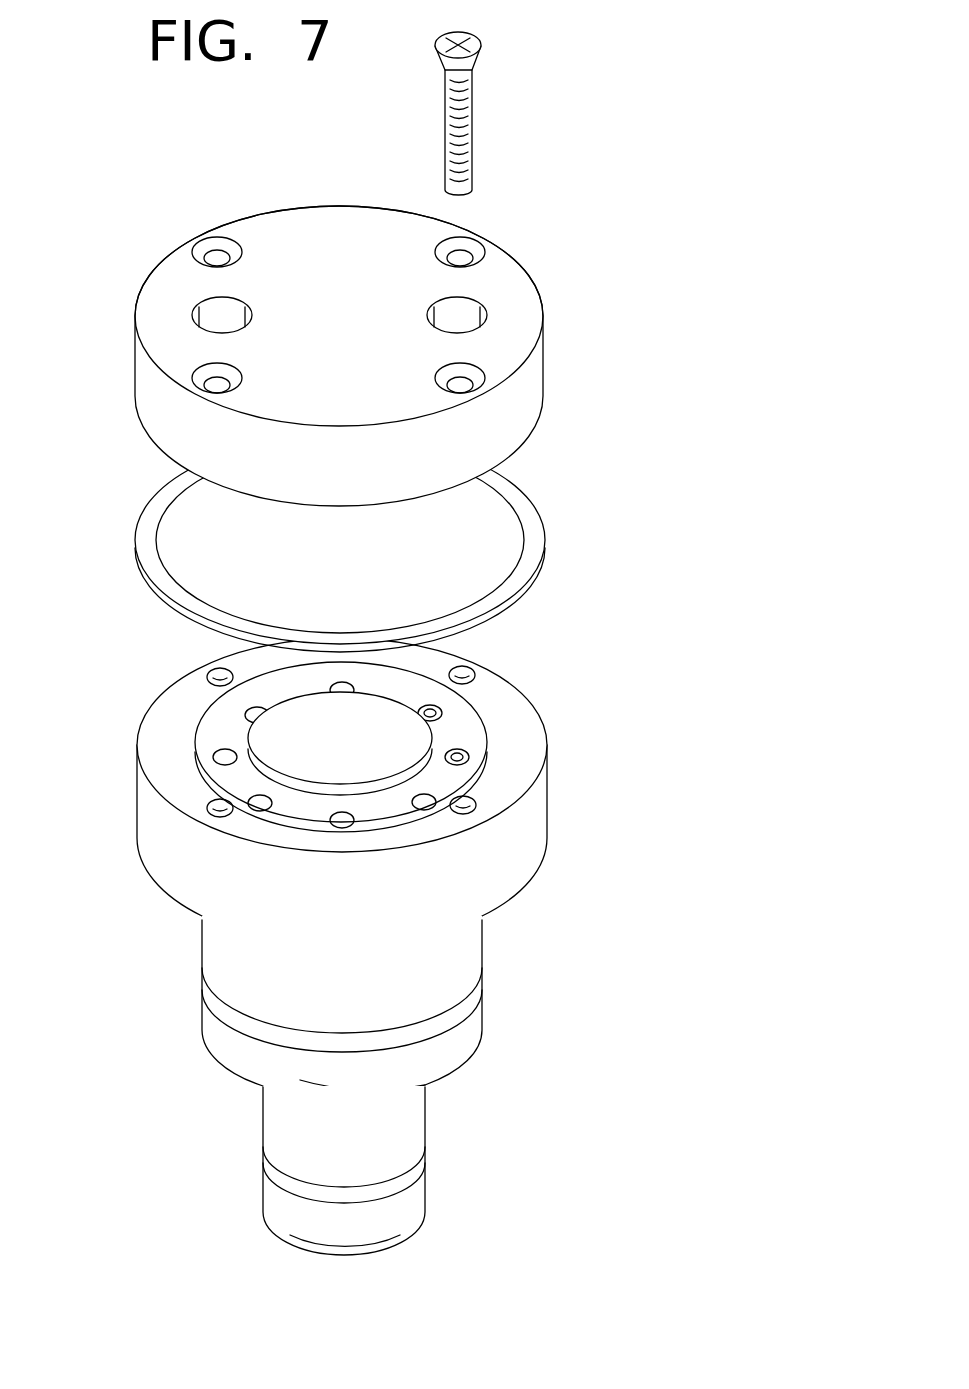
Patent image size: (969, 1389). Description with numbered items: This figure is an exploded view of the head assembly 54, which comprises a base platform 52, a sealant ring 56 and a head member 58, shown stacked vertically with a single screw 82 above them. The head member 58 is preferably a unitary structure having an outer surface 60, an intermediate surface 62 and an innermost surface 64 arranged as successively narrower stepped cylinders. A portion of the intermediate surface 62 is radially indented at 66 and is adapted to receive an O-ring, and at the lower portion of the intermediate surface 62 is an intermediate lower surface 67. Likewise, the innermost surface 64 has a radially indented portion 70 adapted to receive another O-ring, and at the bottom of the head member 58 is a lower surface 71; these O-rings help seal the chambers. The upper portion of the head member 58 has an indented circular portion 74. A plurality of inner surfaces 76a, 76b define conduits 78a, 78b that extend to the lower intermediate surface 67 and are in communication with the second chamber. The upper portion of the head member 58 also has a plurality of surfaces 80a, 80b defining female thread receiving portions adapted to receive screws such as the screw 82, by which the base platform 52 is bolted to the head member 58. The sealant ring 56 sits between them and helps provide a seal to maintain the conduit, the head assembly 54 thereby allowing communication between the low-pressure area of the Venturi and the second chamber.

The base platform 52 is at (528, 383).
The head assembly 54 is at (676, 541).
The sealant ring 56 is at (528, 510).
The head member 58 is at (515, 848).
The outer surface 60 is at (547, 798).
The intermediate surface 62 is at (482, 938).
The innermost surface 64 is at (427, 1122).
The radially indented portion 66 is at (457, 1010).
The intermediate lower surface 67 is at (453, 1067).
The radially indented portion 70 is at (400, 1182).
The lower surface 71 is at (387, 1245).
The indented circular portion 74 is at (227, 733).
The inner surface 76a is at (460, 752).
The inner surface 76b is at (430, 706).
The conduit 78a is at (462, 757).
The conduit 78b is at (440, 712).
The female thread receiving portion surface 80a is at (213, 801).
The female thread receiving portion surface 80b is at (213, 670).
The screw 82 is at (470, 127).